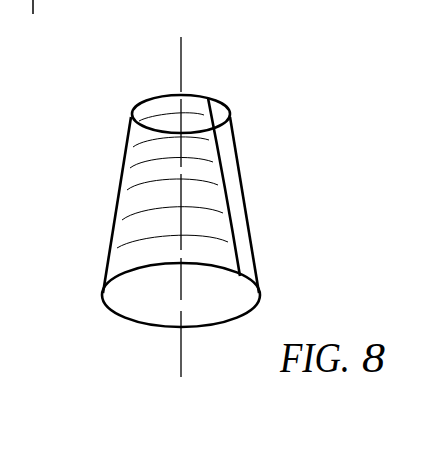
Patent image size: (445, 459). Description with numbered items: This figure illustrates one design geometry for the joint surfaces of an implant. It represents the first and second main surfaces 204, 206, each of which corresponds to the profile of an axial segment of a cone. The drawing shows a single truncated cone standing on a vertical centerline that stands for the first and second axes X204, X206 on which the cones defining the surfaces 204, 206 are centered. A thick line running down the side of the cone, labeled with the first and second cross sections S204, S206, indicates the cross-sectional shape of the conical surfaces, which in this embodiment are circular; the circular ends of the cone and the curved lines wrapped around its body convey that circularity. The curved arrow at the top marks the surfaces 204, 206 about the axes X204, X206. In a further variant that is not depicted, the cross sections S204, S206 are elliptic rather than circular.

The first main surface 204 is at (158, 115).
The second main surface 206 is at (151, 184).
The first axis X204 is at (226, 203).
The second axis X206 is at (226, 203).
The first cross section S204 is at (211, 99).
The second cross section S206 is at (274, 176).